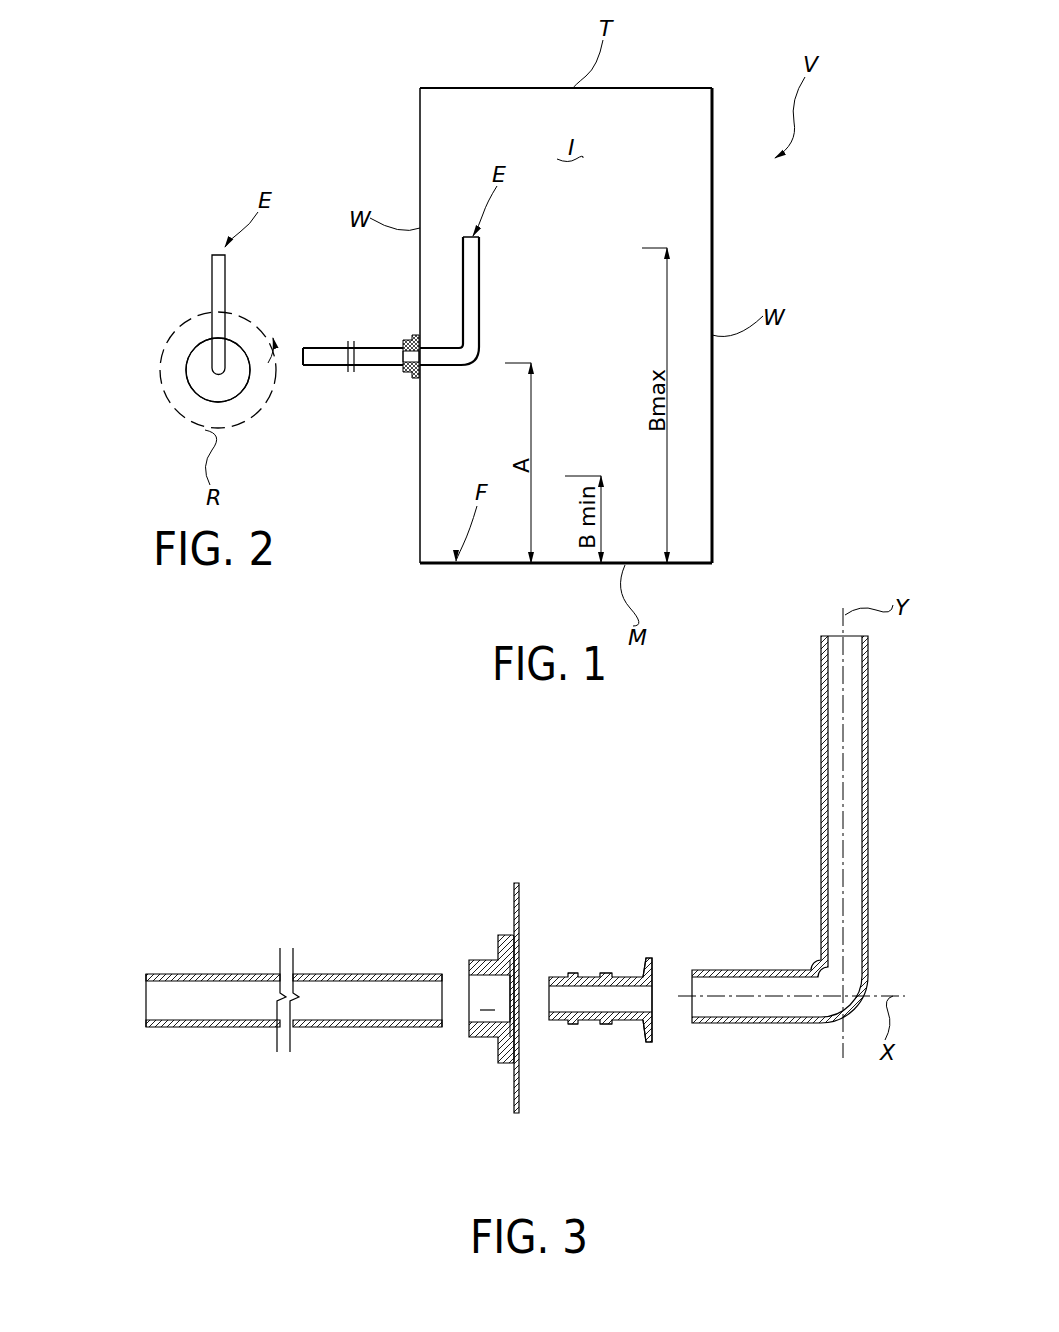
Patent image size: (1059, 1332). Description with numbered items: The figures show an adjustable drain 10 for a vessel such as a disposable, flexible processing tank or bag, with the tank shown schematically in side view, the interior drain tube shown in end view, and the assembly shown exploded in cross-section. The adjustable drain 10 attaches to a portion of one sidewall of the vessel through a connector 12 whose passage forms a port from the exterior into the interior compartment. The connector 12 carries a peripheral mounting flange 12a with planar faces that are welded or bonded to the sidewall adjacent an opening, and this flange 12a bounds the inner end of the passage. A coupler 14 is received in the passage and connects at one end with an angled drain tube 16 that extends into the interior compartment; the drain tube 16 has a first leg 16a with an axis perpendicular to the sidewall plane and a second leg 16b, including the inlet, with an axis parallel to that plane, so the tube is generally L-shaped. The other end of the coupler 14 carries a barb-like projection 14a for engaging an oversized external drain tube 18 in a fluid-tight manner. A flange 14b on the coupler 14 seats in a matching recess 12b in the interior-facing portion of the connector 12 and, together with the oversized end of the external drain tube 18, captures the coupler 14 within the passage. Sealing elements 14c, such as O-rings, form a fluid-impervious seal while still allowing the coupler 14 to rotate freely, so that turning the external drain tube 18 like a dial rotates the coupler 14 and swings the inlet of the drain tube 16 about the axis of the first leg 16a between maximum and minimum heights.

In FIG. 1, the adjustable drain 10 is at (371, 383).
In FIG. 1, the connector 12 is at (417, 383).
In FIG. 2, the connector 12 is at (245, 347).
In FIG. 3, the connector 12 is at (502, 1034).
In FIG. 3, the peripheral mounting flange 12a is at (514, 893).
In FIG. 3, the recess 12b is at (511, 966).
In FIG. 3, the coupler 14 is at (632, 1009).
In FIG. 3, the projection 14a is at (573, 974).
In FIG. 3, the flange 14b is at (651, 958).
In FIG. 3, the sealing elements 14c is at (633, 974).
In FIG. 1, the drain tube 16 is at (479, 305).
In FIG. 2, the drain tube 16 is at (225, 272).
In FIG. 3, the drain tube 16 is at (810, 888).
In FIG. 3, the first leg 16a is at (740, 970).
In FIG. 3, the second leg 16b is at (868, 790).
In FIG. 1, the external drain tube 18 is at (320, 347).
In FIG. 3, the external drain tube 18 is at (326, 974).